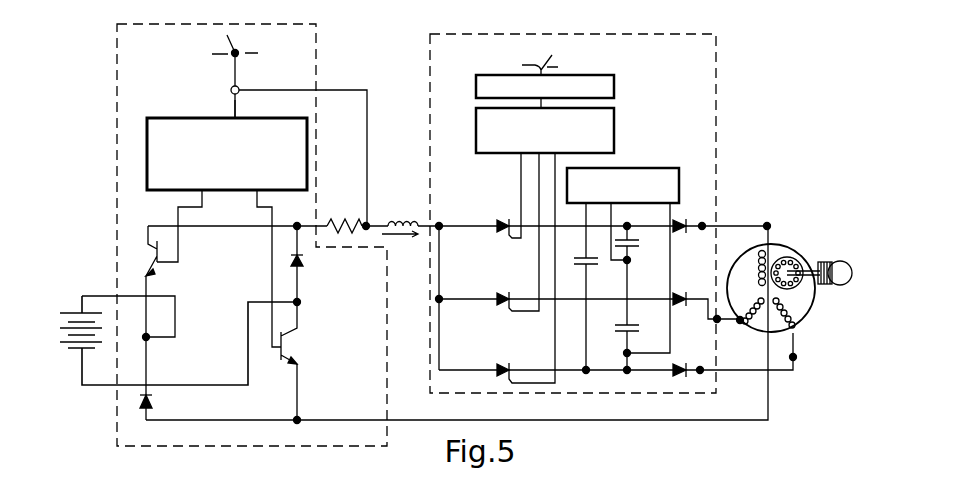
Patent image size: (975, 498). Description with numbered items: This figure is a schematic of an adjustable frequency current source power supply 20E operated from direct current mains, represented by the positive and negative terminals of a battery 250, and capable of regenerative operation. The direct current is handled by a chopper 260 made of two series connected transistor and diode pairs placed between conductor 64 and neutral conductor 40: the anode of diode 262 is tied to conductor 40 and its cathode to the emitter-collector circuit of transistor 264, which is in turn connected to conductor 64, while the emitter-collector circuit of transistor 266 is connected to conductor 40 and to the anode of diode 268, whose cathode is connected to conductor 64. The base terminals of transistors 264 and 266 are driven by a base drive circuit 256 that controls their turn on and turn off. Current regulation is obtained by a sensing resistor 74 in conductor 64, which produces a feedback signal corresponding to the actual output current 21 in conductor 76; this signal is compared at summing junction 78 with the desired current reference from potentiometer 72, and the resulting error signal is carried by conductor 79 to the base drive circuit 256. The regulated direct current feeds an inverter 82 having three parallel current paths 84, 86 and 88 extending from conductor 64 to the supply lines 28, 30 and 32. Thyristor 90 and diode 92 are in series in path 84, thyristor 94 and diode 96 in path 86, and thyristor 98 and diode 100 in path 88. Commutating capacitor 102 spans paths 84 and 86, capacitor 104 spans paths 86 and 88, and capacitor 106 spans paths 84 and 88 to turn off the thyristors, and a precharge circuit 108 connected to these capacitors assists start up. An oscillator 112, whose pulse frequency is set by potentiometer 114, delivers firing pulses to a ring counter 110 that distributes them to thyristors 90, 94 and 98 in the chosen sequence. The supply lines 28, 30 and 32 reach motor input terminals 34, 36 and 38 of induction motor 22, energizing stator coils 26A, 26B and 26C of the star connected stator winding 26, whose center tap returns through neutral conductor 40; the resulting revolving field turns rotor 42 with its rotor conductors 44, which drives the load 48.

The induction motor 22 is at (814, 292).
The stator winding 26 is at (751, 262).
The stator coil 26A is at (770, 250).
The stator coil 26B is at (747, 296).
The stator coil 26C is at (796, 342).
The supply line 28 is at (735, 226).
The supply line 30 is at (741, 326).
The supply line 32 is at (720, 374).
The motor input terminal 34 is at (767, 224).
The motor input terminal 36 is at (718, 324).
The motor input terminal 38 is at (793, 362).
The neutral conductor 40 is at (392, 420).
The rotor 42 is at (800, 330).
The rotor conductors 44 is at (793, 258).
The load 48 is at (839, 261).
The power supply 20E is at (379, 139).
The output current 21 is at (394, 239).
The conductor 64 is at (318, 222).
The potentiometer 72 is at (236, 52).
The resistor 74 is at (344, 215).
The conductor 76 is at (367, 107).
The summing junction 78 is at (231, 90).
The conductor 79 is at (240, 110).
The inverter 82 is at (717, 83).
The current path 84 is at (452, 227).
The current path 86 is at (452, 299).
The current path 88 is at (452, 370).
The thyristor 90 is at (505, 222).
The diode 92 is at (688, 222).
The thyristor 94 is at (506, 296).
The diode 96 is at (686, 295).
The thyristor 98 is at (506, 366).
The diode 100 is at (686, 362).
The capacitor 102 is at (639, 245).
The capacitor 104 is at (639, 330).
The capacitor 106 is at (598, 257).
The precharge circuit 108 is at (655, 168).
The ring counter 110 is at (614, 128).
The oscillator 112 is at (614, 87).
The potentiometer 114 is at (556, 66).
The battery 250 is at (72, 352).
The base drive circuit 256 is at (307, 140).
The chopper 260 is at (316, 50).
The diode 262 is at (152, 402).
The transistor 264 is at (162, 268).
The transistor 266 is at (289, 353).
The diode 268 is at (301, 264).